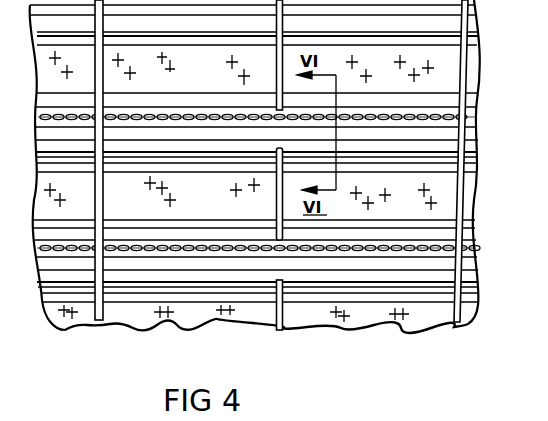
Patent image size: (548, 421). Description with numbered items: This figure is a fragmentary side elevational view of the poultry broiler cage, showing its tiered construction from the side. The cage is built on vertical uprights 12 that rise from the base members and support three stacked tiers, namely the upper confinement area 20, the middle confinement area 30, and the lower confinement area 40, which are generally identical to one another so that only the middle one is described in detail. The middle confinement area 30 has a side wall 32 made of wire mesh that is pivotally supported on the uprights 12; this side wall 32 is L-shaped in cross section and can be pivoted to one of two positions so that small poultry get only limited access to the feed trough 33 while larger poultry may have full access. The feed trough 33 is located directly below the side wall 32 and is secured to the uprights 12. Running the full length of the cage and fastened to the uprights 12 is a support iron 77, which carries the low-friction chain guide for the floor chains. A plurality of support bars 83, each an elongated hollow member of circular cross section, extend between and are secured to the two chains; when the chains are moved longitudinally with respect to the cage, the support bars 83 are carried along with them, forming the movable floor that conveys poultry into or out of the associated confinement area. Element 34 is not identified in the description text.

The vertical uprights 12 is at (100, 313).
The upper confinement area 20 is at (212, 77).
The middle confinement area 30 is at (221, 197).
The side wall 32 is at (157, 207).
The feed trough 33 is at (197, 232).
The tie bar 34 is at (282, 208).
The lower confinement area 40 is at (258, 315).
The support iron 77 is at (137, 134).
The support bars 83 is at (253, 247).